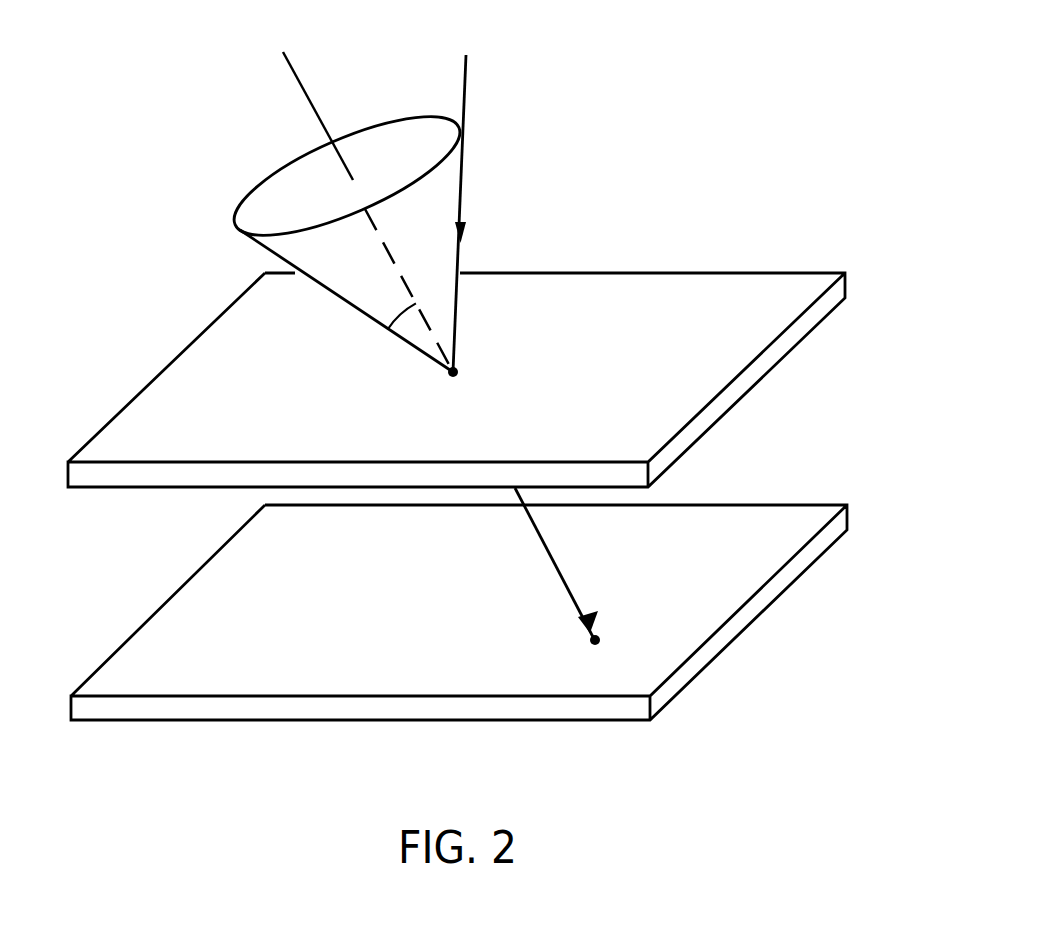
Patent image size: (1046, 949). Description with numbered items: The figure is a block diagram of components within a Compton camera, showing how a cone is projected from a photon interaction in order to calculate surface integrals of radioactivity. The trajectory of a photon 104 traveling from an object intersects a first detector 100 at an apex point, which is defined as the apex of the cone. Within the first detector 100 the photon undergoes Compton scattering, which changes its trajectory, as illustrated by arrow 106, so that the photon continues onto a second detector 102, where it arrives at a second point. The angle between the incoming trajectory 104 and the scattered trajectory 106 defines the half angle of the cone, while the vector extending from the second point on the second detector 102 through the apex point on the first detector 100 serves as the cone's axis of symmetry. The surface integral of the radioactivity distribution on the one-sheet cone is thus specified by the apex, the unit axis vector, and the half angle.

The first detector 100 is at (787, 272).
The second detector 102 is at (787, 505).
The photon trajectory 104 is at (465, 93).
The scattered photon trajectory 106 is at (576, 603).